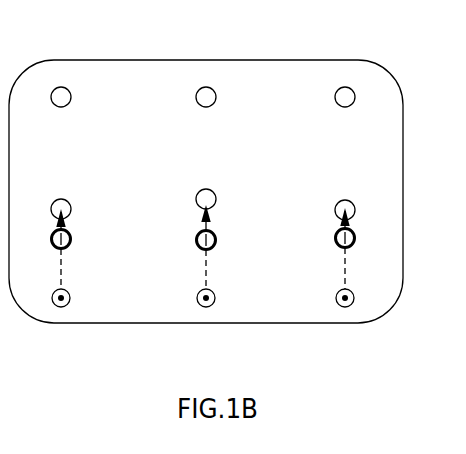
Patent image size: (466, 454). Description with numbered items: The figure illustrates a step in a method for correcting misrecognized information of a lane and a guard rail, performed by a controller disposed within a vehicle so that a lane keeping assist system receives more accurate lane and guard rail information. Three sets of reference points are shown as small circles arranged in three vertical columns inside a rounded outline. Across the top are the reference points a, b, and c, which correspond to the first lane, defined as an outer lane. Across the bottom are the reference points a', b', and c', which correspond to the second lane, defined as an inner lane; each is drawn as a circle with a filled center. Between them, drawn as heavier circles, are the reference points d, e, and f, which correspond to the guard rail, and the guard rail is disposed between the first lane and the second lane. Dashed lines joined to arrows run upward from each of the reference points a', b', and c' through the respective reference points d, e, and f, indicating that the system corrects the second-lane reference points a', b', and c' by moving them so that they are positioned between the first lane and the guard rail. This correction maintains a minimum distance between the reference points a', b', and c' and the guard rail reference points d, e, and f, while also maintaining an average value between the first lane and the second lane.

The reference point a is at (74, 61).
The reference point b is at (219, 61).
The reference point c is at (357, 61).
The reference point d is at (72, 239).
The reference point e is at (217, 240).
The reference point f is at (356, 238).
The reference point a' is at (82, 297).
The reference point b' is at (227, 297).
The reference point c' is at (358, 282).